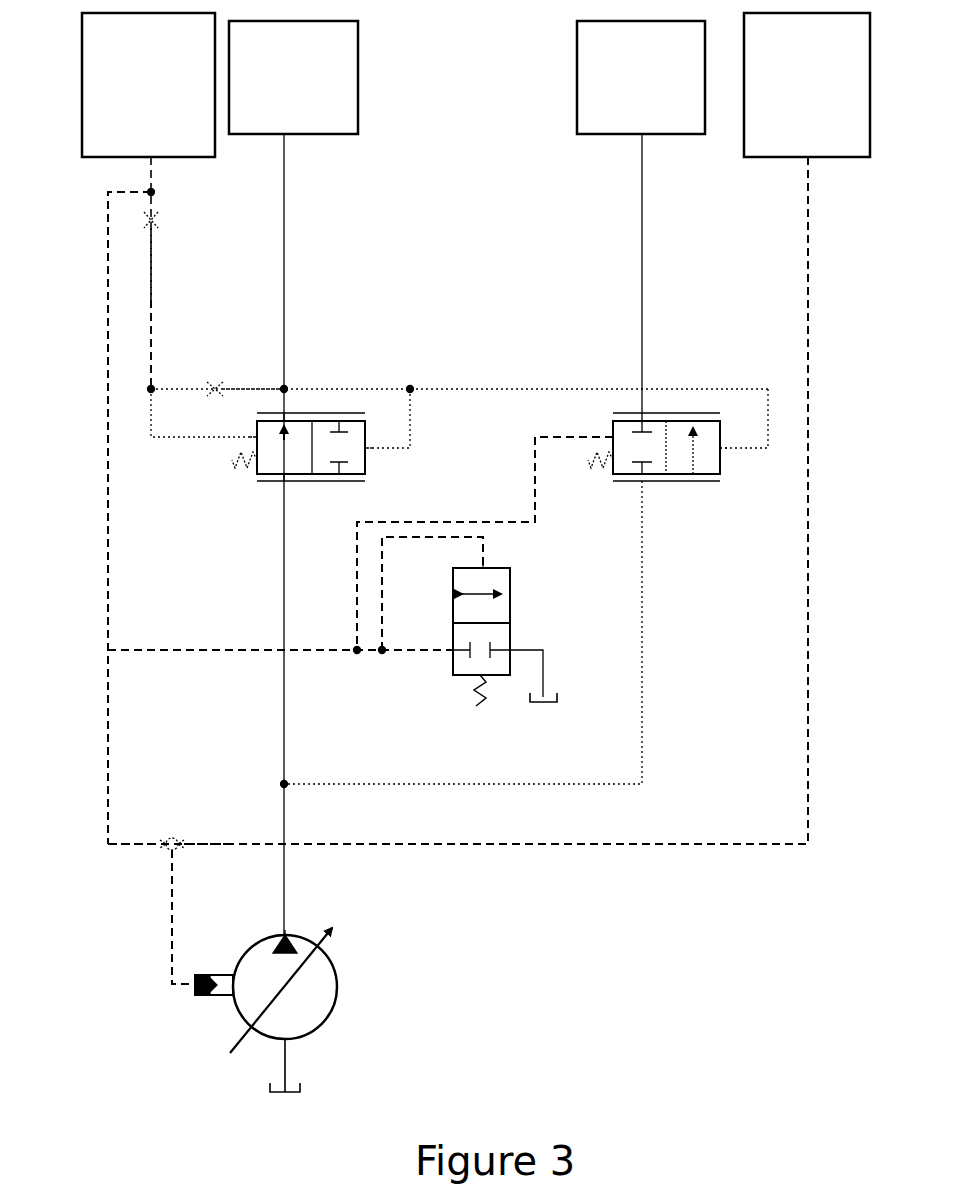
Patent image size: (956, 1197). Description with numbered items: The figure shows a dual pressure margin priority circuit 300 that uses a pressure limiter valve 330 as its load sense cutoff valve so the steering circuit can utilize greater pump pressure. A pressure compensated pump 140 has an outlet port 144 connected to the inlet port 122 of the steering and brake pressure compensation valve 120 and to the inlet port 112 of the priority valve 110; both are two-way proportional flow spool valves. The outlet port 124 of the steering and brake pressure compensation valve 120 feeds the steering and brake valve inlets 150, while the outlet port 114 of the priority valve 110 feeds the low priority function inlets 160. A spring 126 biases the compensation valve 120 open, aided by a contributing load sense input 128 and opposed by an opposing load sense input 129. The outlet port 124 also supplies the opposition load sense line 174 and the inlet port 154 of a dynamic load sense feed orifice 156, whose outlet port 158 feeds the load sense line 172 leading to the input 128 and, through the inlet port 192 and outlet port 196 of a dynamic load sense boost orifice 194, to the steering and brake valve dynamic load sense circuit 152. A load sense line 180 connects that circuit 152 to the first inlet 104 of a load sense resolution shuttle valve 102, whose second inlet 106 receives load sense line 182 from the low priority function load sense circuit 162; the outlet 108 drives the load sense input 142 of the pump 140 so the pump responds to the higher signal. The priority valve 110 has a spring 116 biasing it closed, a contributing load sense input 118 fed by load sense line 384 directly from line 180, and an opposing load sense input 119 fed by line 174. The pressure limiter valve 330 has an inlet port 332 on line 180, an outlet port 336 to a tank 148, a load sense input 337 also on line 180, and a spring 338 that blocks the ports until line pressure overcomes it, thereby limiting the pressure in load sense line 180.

The load sense resolution shuttle valve 102 is at (175, 885).
The first inlet 104 is at (162, 845).
The second inlet 106 is at (185, 842).
The outlet 108 is at (170, 850).
The priority valve 110 is at (532, 575).
The inlet port 112 is at (642, 481).
The outlet port 114 is at (642, 413).
The spring 116 is at (596, 460).
The contributing load sense input 118 is at (613, 437).
The opposing load sense input 119 is at (720, 448).
The steering and brake pressure compensation valve 120 is at (306, 453).
The inlet port 122 is at (283, 481).
The outlet port 124 is at (284, 413).
The spring 126 is at (230, 460).
The contributing load sense input 128 is at (257, 432).
The opposing load sense input 129 is at (365, 448).
The pump 140 is at (291, 985).
The load sense input 142 is at (210, 994).
The outlet port 144 is at (285, 935).
The tank 148 is at (558, 702).
The steering and brake valve inlets 150 is at (358, 87).
The steering and brake valve dynamic load sense circuit 152 is at (82, 78).
The inlet port 154 is at (225, 390).
The dynamic load sense feed orifice 156 is at (216, 378).
The outlet port 158 is at (205, 390).
The low priority function inlets 160 is at (577, 80).
The low priority function load sense circuit 162 is at (744, 143).
The load sense line 172 is at (155, 340).
The opposition load sense line 174 is at (500, 389).
The load sense line 180 is at (108, 556).
The load sense line 182 is at (808, 660).
The inlet port 192 is at (155, 237).
The dynamic load sense boost orifice 194 is at (168, 220).
The outlet port 196 is at (157, 208).
The dual pressure margin priority circuit 300 is at (463, 190).
The pressure limiter valve 330 is at (456, 640).
The inlet port 332 is at (453, 650).
The outlet port 336 is at (510, 650).
The load sense input 337 is at (483, 568).
The spring 338 is at (492, 680).
The load sense line 384 is at (357, 583).